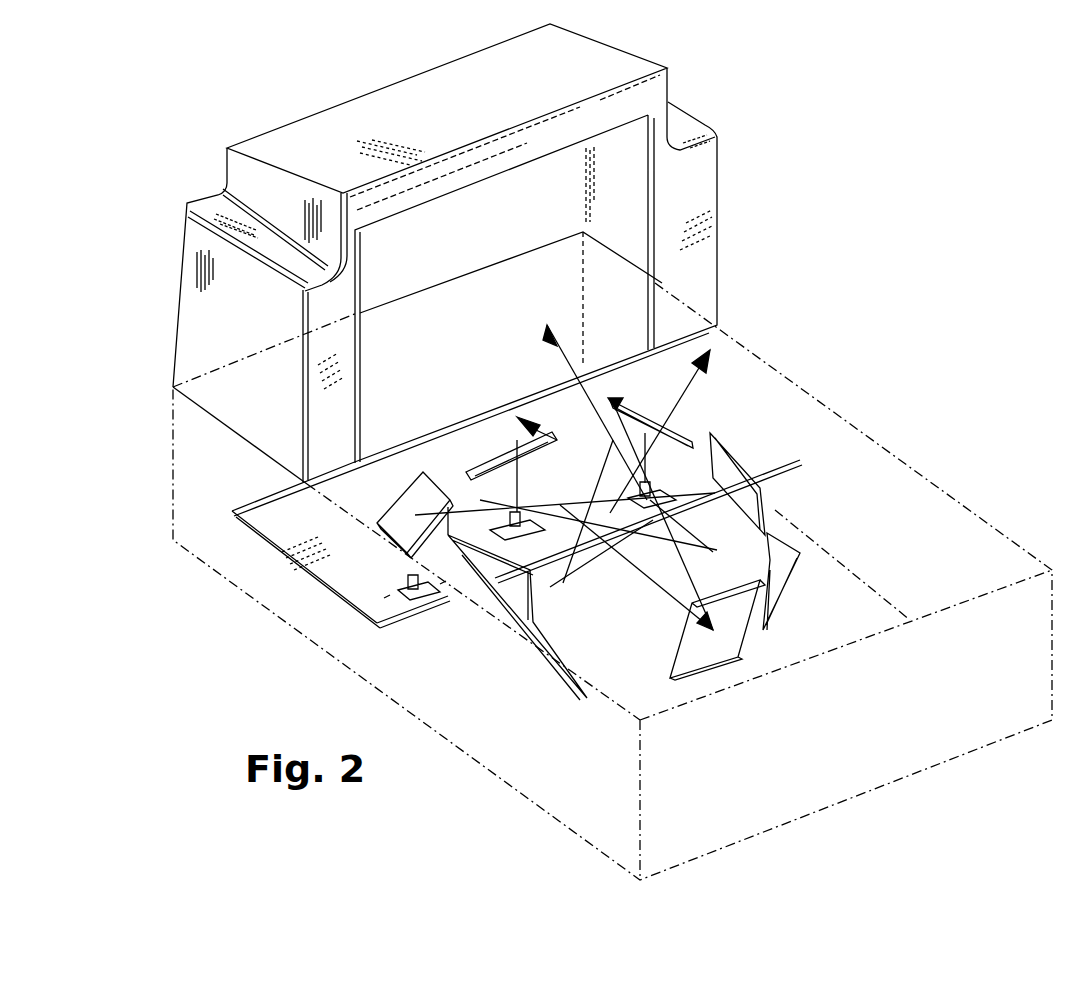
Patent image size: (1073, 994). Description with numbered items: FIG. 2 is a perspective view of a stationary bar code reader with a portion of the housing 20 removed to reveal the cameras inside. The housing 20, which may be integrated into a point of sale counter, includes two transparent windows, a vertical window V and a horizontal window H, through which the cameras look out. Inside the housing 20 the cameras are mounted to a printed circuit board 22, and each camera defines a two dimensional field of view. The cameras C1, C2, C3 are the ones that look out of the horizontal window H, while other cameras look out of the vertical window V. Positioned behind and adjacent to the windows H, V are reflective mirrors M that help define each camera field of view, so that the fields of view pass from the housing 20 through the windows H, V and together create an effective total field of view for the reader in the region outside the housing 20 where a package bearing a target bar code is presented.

The housing 20 is at (680, 208).
The vertical window V is at (622, 185).
The horizontal window H is at (777, 508).
The printed circuit board 22 is at (357, 572).
The camera C1 is at (420, 600).
The camera C2 is at (503, 516).
The camera C3 is at (660, 480).
The reflective mirrors M is at (643, 420).